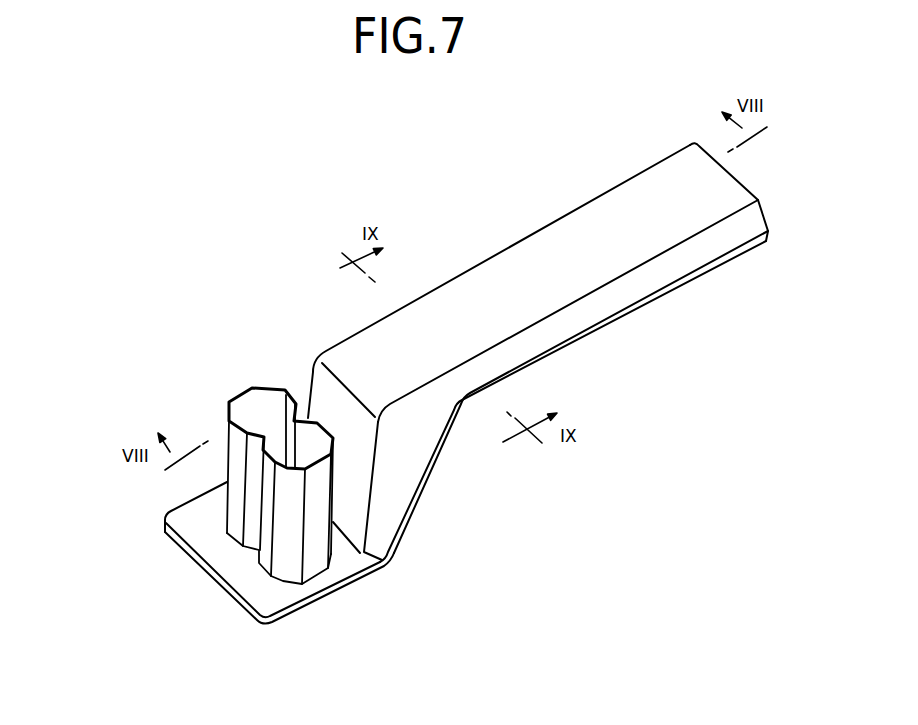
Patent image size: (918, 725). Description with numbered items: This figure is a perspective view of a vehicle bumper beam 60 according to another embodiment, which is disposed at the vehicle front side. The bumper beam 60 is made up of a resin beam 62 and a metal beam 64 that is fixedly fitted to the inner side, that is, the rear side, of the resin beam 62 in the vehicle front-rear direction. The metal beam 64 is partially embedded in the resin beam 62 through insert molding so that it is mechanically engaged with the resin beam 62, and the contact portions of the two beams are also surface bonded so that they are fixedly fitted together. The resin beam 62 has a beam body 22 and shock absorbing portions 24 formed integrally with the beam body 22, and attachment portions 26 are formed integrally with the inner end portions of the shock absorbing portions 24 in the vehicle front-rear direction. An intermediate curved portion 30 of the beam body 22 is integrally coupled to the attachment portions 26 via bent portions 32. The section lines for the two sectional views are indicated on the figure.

The beam body 22 is at (586, 162).
The shock absorbing portion 24 is at (233, 447).
The attachment portion 26 is at (228, 565).
The intermediate curved portion 30 is at (513, 257).
The bent portion 32 is at (353, 475).
The vehicle bumper beam 60 is at (360, 167).
The resin beam 62 is at (271, 309).
The metal beam 64 is at (375, 632).